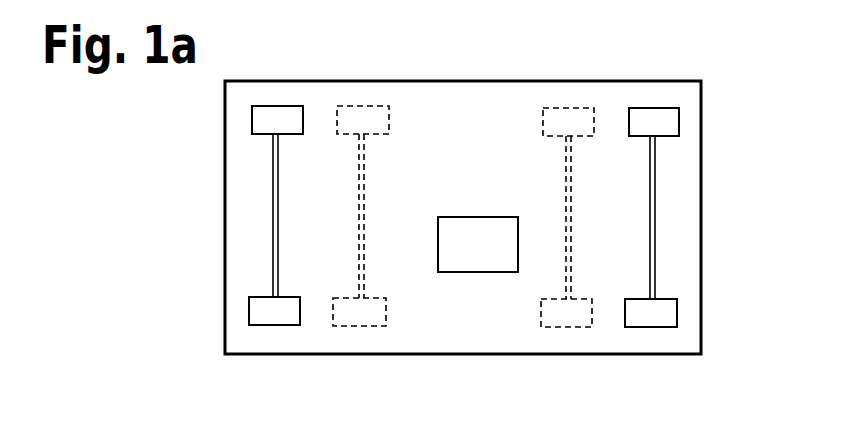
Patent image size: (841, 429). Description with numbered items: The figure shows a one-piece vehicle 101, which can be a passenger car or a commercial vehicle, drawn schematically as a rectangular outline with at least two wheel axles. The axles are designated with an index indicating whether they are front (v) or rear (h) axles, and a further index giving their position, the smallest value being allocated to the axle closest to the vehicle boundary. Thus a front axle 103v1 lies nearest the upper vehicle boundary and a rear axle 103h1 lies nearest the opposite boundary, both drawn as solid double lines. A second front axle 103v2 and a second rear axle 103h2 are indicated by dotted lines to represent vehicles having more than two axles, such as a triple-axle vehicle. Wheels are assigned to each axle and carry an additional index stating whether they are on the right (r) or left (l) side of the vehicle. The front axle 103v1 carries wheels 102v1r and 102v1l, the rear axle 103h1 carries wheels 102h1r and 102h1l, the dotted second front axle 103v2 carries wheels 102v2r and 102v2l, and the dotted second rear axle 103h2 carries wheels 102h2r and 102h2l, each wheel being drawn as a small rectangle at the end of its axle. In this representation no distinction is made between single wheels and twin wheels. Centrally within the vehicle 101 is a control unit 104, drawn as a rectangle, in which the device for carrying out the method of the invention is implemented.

The one-piece vehicle 101 is at (695, 258).
The wheel 102v1r is at (275, 118).
The wheel 102v2r is at (362, 108).
The wheel 102h2r is at (568, 108).
The wheel 102h1r is at (656, 118).
The wheel 102v1l is at (272, 320).
The wheel 102v2l is at (355, 320).
The wheel 102h2l is at (570, 320).
The wheel 102h1l is at (652, 320).
The front axle 103v1 is at (307, 193).
The front axle 103v2 is at (392, 193).
The rear axle 103h2 is at (566, 203).
The rear axle 103h1 is at (650, 203).
The control unit 104 is at (461, 272).